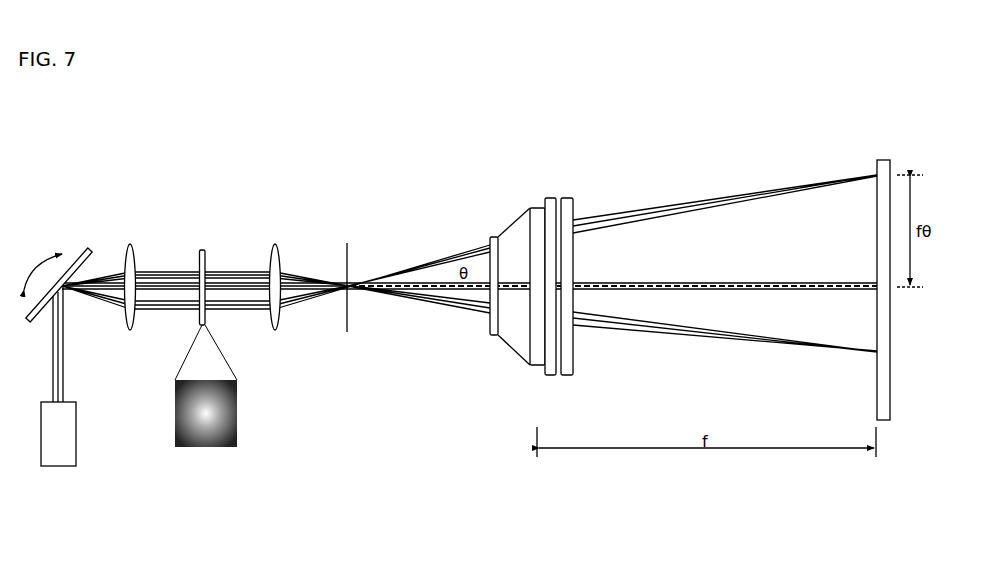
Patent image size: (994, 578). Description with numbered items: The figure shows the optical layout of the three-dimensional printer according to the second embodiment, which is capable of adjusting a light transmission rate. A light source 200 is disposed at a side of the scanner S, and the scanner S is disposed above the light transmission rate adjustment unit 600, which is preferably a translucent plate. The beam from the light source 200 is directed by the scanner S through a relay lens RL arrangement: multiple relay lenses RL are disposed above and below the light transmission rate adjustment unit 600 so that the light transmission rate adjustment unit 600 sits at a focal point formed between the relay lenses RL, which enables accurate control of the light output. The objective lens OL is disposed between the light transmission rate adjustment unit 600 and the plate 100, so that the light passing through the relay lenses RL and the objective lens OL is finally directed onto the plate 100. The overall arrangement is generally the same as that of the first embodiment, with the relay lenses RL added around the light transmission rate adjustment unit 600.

The scanner S is at (78, 250).
The relay lens RL is at (272, 250).
The light transmission rate adjustment unit 600 is at (197, 317).
The light source 200 is at (62, 458).
The objective lens OL is at (540, 207).
The plate 100 is at (881, 155).